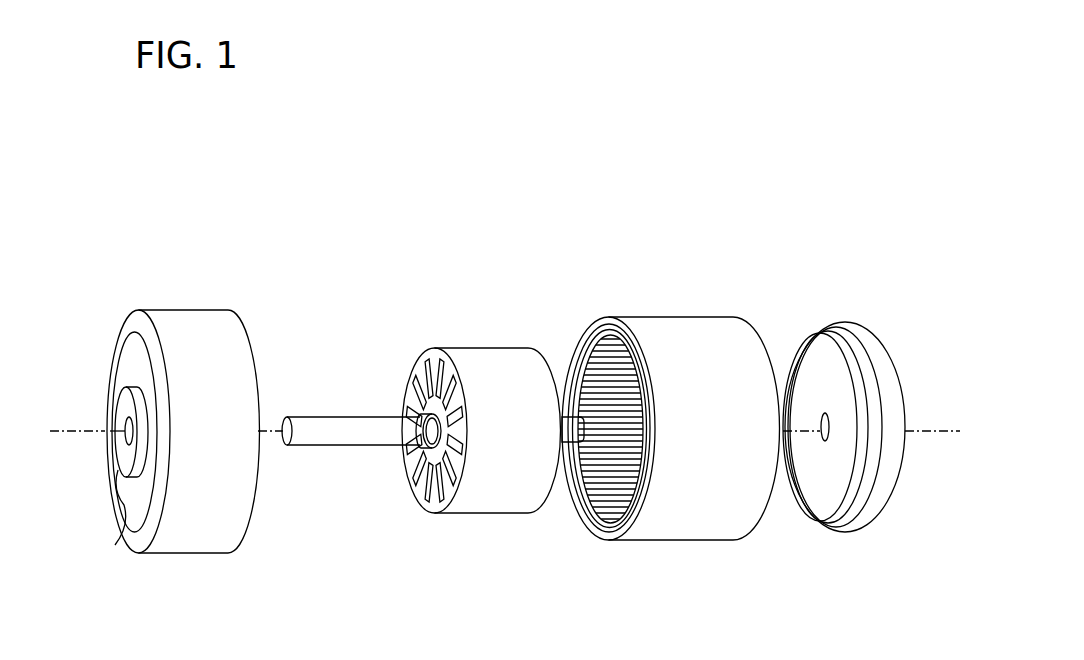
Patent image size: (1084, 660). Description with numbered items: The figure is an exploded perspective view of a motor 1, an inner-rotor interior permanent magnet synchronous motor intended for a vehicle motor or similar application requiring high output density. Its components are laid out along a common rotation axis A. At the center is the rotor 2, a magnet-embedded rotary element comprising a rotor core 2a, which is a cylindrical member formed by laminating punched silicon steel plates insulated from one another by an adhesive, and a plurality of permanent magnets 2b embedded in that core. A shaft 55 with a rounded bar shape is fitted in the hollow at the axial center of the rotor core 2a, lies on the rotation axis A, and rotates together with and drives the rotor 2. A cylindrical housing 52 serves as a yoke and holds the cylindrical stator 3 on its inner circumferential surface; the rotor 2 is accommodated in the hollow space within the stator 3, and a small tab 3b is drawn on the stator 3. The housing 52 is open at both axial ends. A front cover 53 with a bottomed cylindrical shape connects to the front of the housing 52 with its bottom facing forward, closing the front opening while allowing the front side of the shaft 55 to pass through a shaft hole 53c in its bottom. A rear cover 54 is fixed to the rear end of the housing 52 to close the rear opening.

The motor 1 is at (762, 214).
The rotor 2 is at (459, 405).
The rotor core 2a is at (510, 348).
The permanent magnets 2b is at (420, 365).
The stator 3 is at (569, 456).
The stator terminal 3b is at (588, 483).
The housing 52 is at (660, 316).
The front cover 53 is at (152, 459).
The shaft hole 53c is at (125, 516).
The rear cover 54 is at (845, 533).
The shaft 55 is at (305, 447).
The rotation axis A is at (55, 428).